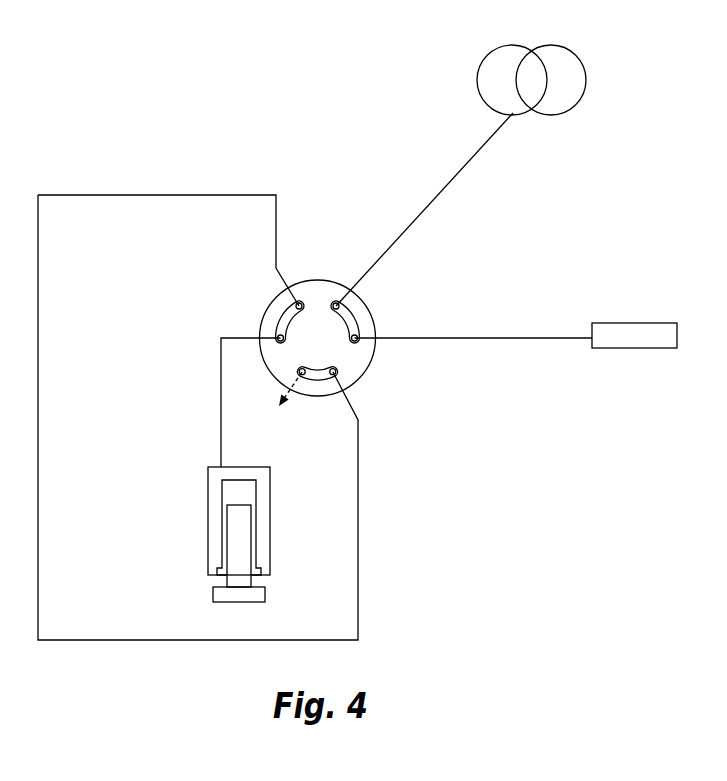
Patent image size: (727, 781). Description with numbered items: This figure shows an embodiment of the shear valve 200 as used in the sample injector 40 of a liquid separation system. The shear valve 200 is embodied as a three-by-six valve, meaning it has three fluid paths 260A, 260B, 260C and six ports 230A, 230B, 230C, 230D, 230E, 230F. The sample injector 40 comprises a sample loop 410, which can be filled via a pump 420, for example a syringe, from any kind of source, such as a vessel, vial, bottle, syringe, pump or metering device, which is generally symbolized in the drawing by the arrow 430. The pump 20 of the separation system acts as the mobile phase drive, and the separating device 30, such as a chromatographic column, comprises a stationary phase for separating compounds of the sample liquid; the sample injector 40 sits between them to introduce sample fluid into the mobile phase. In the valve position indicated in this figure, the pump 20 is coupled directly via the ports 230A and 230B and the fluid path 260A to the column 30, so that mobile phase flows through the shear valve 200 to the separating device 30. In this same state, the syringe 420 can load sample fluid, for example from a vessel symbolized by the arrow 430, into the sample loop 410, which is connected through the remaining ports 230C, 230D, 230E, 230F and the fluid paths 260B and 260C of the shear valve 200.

The pump 20 is at (530, 46).
The separating device 30 is at (630, 328).
The sample injector 40 is at (438, 502).
The shear valve 200 is at (323, 270).
The port 230A is at (340, 306).
The port 230B is at (358, 335).
The port 230C is at (336, 370).
The port 230D is at (300, 371).
The port 230E is at (281, 338).
The port 230F is at (298, 306).
The fluid path 260A is at (363, 316).
The fluid path 260B is at (331, 378).
The fluid path 260C is at (277, 318).
The sample loop 410 is at (40, 521).
The pump 420 is at (268, 525).
The arrow 430 is at (277, 404).